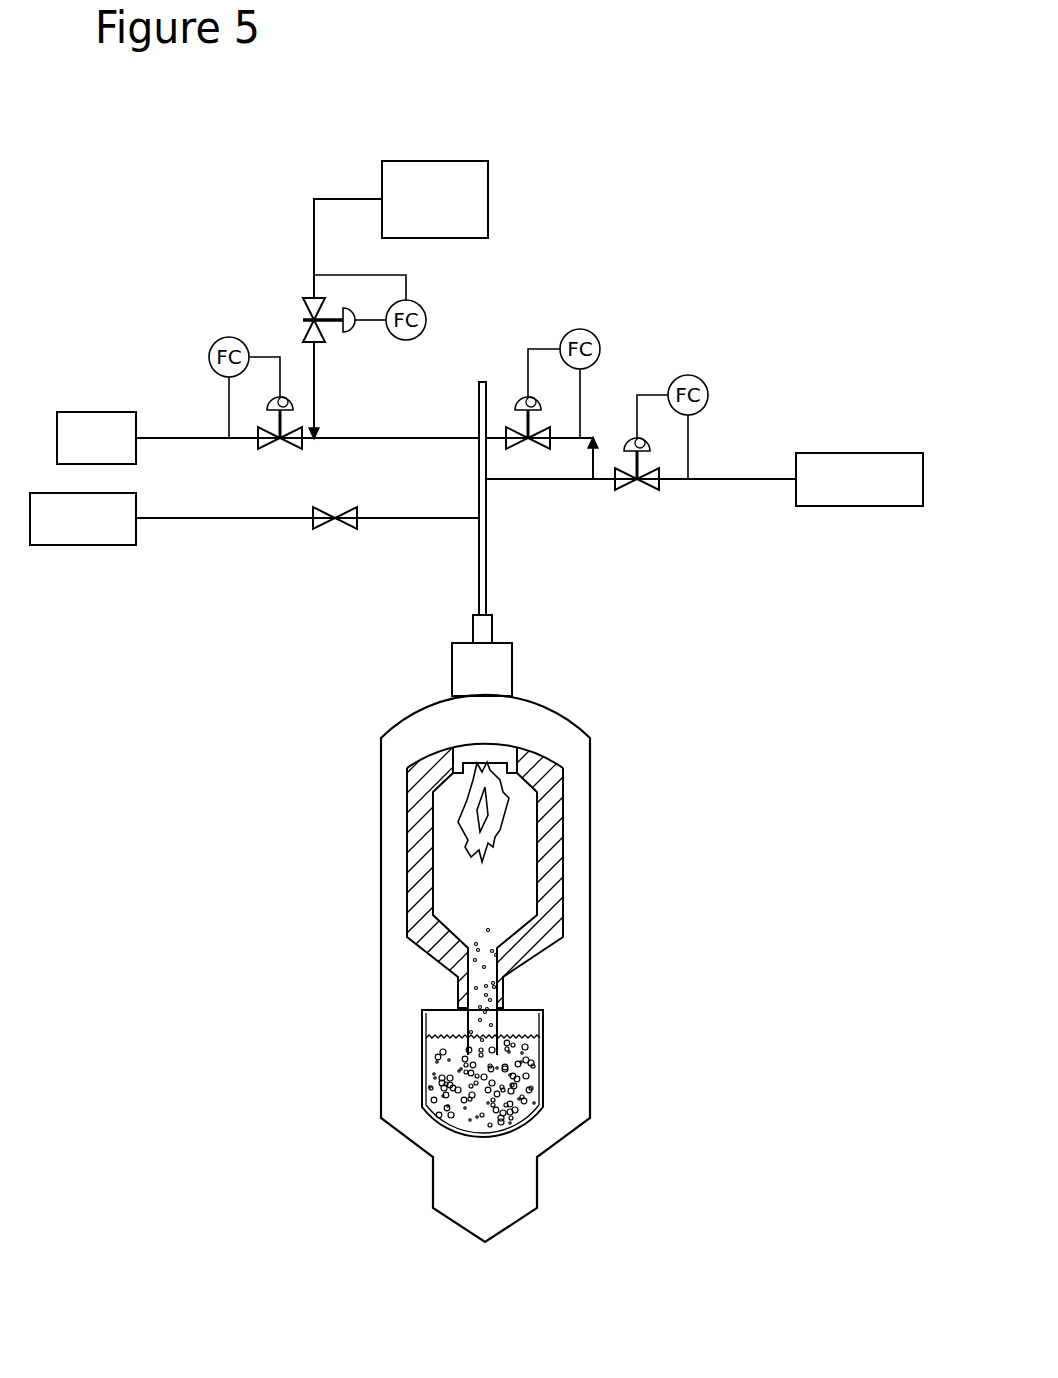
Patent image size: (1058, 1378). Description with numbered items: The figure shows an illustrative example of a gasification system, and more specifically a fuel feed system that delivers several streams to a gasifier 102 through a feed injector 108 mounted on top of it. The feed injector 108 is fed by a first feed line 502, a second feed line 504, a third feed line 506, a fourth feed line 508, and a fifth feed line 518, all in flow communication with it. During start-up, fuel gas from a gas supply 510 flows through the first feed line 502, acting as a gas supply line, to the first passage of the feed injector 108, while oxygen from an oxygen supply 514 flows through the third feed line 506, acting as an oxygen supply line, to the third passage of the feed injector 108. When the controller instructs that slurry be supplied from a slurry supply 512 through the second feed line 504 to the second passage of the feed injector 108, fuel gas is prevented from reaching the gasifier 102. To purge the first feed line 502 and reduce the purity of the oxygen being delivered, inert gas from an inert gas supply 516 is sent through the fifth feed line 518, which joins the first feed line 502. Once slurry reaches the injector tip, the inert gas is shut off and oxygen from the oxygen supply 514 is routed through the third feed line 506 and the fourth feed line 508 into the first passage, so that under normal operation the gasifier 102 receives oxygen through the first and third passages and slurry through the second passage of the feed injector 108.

The gasifier 102 is at (545, 705).
The feed injector 108 is at (487, 565).
The first feed line 502 is at (350, 438).
The second feed line 504 is at (383, 518).
The third feed line 506 is at (702, 479).
The fourth feed line 508 is at (583, 432).
The gas supply 510 is at (88, 412).
The slurry supply 512 is at (127, 493).
The oxygen supply 514 is at (833, 453).
The inert gas supply 516 is at (432, 161).
The fifth feed line 518 is at (360, 197).